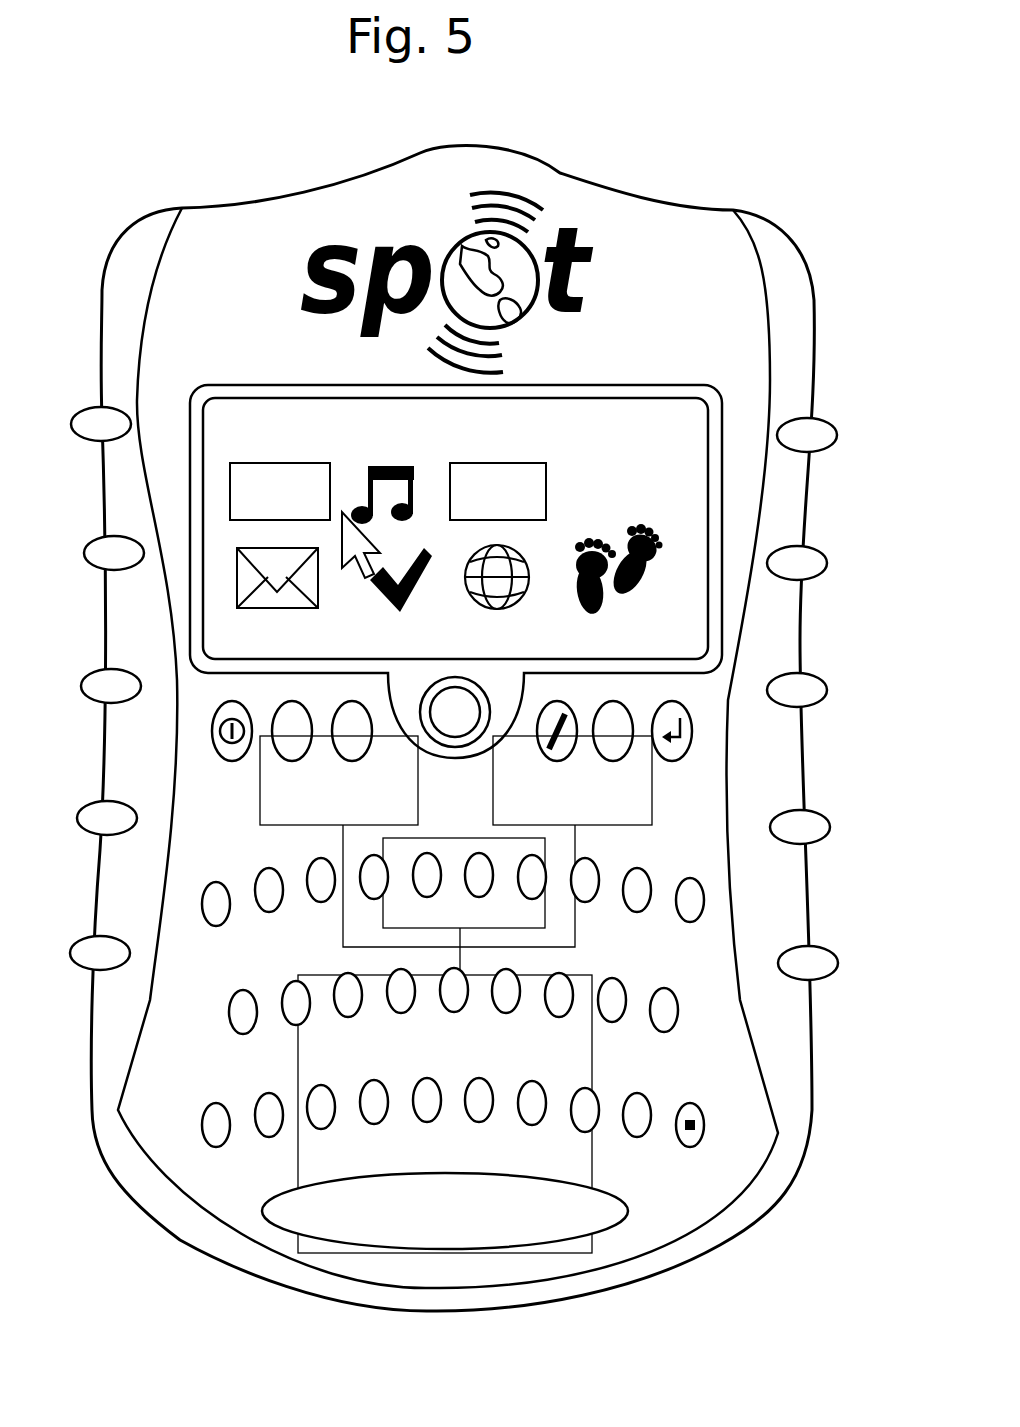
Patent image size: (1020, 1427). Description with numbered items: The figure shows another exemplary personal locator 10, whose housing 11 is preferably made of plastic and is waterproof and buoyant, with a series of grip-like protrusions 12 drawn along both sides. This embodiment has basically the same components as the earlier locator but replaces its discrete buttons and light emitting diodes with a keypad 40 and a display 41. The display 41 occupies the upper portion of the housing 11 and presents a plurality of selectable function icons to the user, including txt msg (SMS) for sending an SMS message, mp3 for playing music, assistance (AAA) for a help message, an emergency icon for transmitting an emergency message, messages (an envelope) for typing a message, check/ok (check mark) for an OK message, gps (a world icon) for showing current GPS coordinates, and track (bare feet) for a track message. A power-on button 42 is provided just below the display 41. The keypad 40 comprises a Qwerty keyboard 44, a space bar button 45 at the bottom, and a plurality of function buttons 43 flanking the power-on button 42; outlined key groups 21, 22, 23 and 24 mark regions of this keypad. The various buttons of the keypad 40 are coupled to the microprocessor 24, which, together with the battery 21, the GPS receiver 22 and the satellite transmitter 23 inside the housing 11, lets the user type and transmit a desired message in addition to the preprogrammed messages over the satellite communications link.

The personal locator 10 is at (190, 133).
The housing 11 is at (104, 270).
The grip protrusions 12 is at (83, 437).
The battery 21 is at (594, 1165).
The global positioning system (GPS) receiver 22 is at (652, 820).
The satellite transmitter 23 is at (258, 817).
The microprocessor 24 is at (455, 838).
The keypad 40 is at (854, 918).
The display 41 is at (707, 407).
The power-on button 42 is at (455, 727).
The function buttons 43 is at (753, 744).
The Qwerty keyboard 44 is at (718, 976).
The space bar button 45 is at (628, 1212).